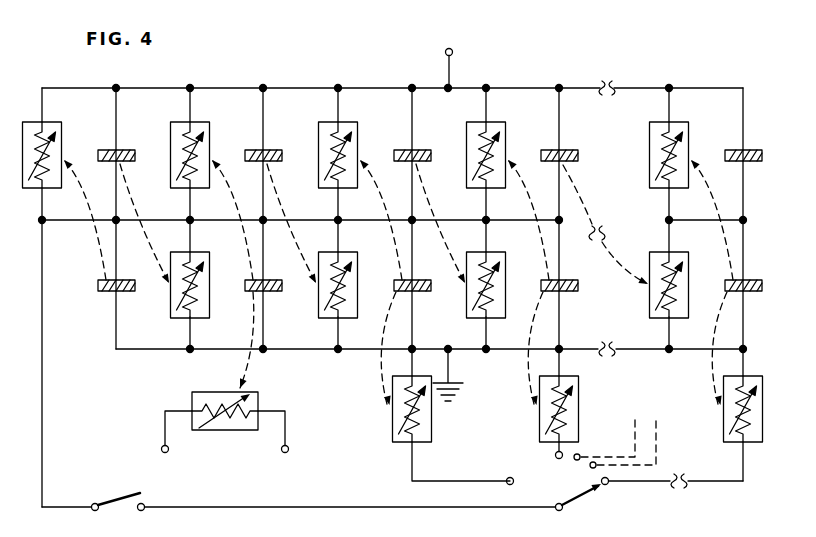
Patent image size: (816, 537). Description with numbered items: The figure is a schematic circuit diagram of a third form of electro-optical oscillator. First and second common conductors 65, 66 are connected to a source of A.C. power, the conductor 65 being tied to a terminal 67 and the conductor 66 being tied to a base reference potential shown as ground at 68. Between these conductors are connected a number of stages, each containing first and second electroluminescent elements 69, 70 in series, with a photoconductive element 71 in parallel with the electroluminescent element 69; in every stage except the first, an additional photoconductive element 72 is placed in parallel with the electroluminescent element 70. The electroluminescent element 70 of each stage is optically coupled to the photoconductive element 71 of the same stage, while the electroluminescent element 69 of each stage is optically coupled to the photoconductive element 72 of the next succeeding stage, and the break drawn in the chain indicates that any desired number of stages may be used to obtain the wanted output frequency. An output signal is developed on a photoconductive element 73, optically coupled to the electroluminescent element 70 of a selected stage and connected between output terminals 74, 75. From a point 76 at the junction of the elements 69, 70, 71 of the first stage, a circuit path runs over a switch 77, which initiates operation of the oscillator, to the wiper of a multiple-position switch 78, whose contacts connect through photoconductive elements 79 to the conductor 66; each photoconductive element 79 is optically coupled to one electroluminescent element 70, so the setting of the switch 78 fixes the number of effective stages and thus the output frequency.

The first common conductor 65 is at (288, 87).
The second common conductor 66 is at (287, 350).
The terminal 67 is at (453, 50).
The ground 68 is at (451, 370).
The first electroluminescent element 69 is at (121, 150).
The second electroluminescent element 70 is at (121, 291).
The photoconductive element 71 is at (53, 124).
The additional photoconductive element 72 is at (199, 318).
The photoconductive element 73 is at (224, 431).
The output terminal 74 is at (167, 453).
The output terminal 75 is at (283, 453).
The point 76 is at (44, 222).
The switch 77 is at (118, 494).
The multiple-position switch 78 is at (583, 494).
The photoconductive element 79 is at (431, 421).